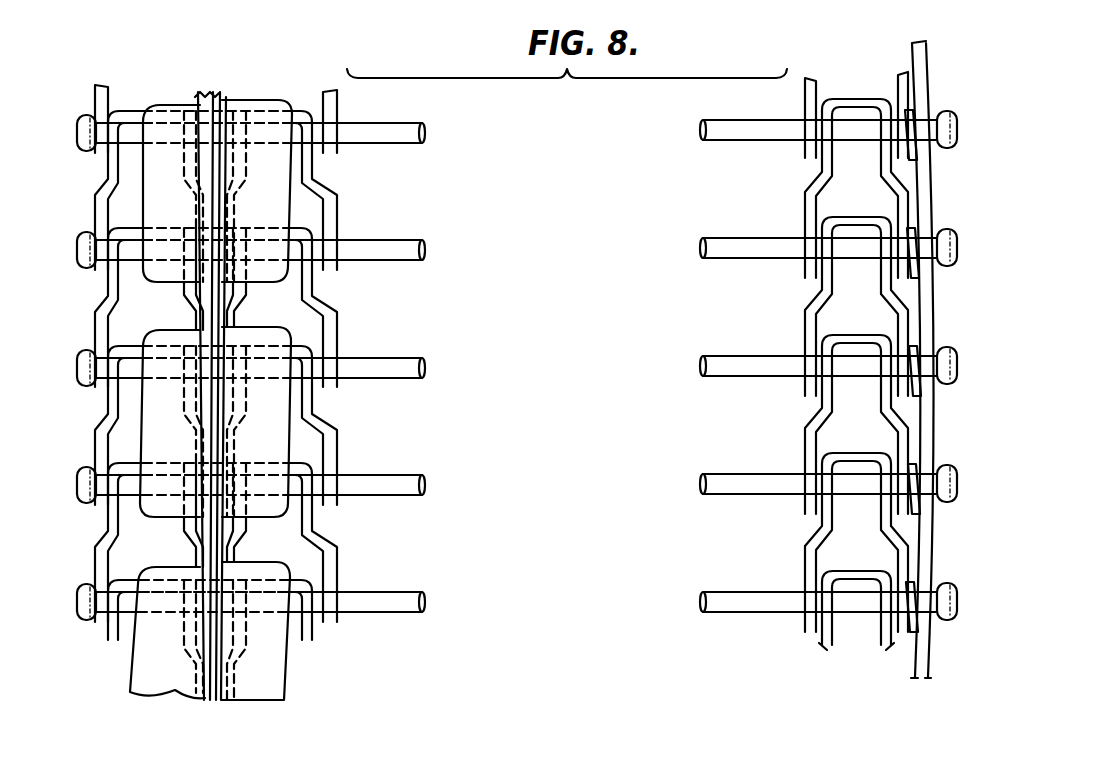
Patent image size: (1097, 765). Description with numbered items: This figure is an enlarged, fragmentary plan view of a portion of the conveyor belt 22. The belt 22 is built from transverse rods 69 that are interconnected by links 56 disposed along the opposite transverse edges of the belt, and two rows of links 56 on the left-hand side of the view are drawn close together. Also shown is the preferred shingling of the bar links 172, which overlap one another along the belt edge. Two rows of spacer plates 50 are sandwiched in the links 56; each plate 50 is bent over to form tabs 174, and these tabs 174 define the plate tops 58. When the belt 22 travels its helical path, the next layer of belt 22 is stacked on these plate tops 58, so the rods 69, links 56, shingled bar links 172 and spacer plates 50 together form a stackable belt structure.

The conveyor belt 22 is at (1050, 360).
The spacer plates 50 is at (264, 101).
The links 56 is at (338, 195).
The plate tops 58 is at (277, 430).
The transverse rods 69 is at (748, 138).
The bar links 172 is at (934, 204).
The tabs 174 is at (162, 120).